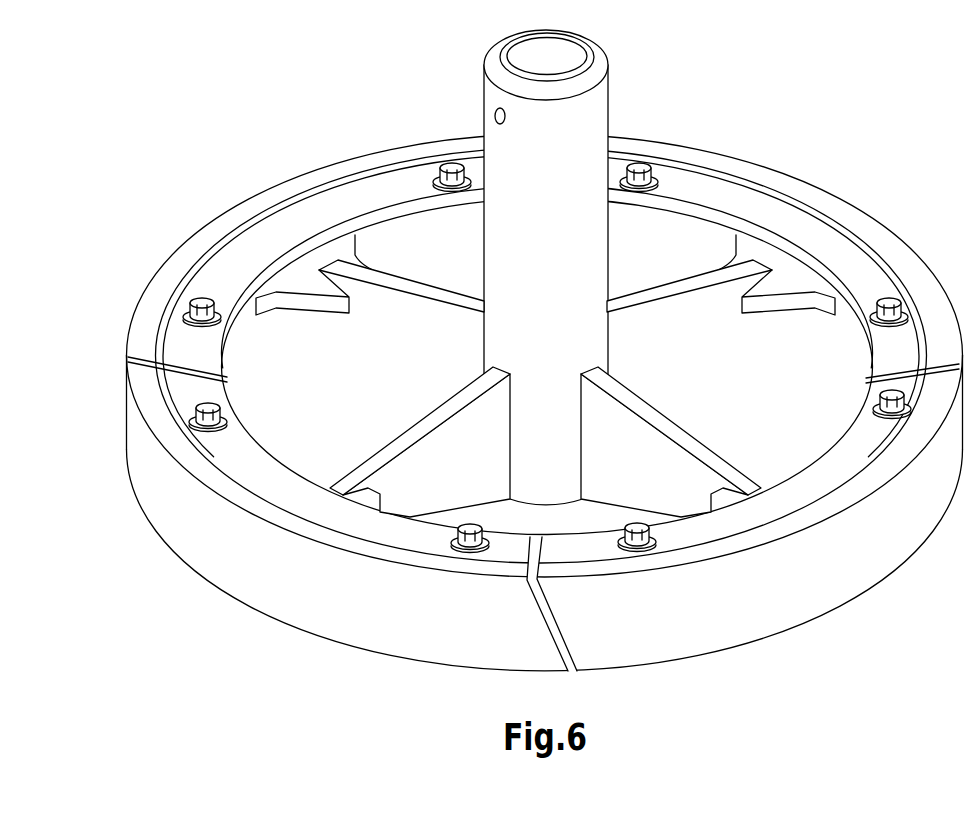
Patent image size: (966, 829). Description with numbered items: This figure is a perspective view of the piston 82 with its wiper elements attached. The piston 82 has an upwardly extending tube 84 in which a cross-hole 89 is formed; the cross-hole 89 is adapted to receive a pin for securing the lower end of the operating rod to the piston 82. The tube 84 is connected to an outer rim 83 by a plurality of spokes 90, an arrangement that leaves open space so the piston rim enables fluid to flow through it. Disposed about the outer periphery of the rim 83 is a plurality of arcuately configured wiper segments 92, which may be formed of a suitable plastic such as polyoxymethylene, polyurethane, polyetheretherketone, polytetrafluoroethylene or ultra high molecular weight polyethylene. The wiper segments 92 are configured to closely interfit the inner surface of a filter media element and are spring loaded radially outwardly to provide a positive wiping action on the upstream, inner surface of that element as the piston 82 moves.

The piston 82 is at (302, 160).
The outer rim 83 is at (246, 339).
The tube 84 is at (598, 106).
The cross-hole 89 is at (493, 114).
The spokes 90 is at (407, 328).
The wiper segments 92 is at (722, 154).